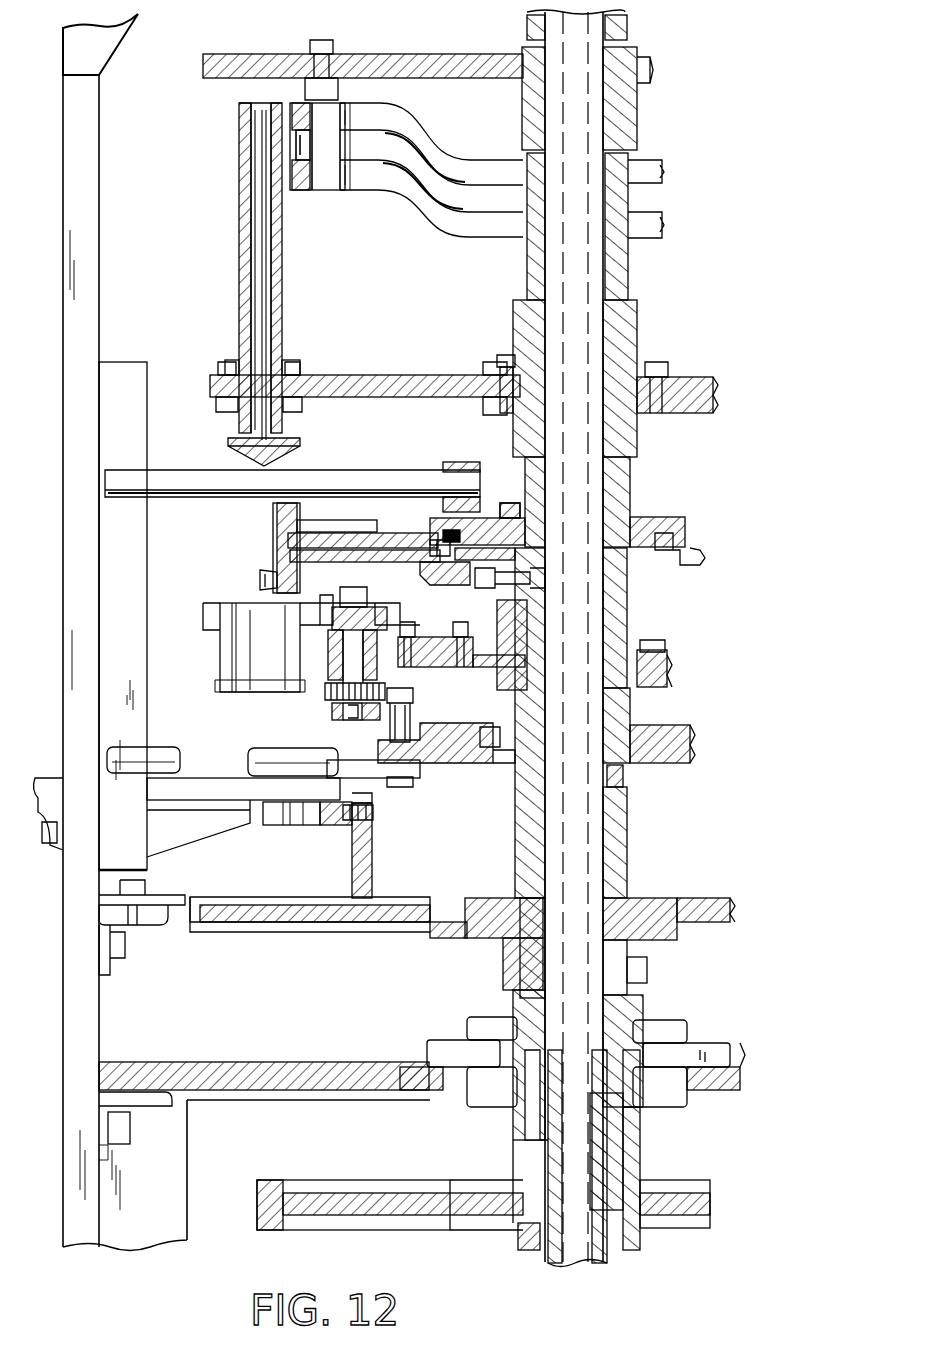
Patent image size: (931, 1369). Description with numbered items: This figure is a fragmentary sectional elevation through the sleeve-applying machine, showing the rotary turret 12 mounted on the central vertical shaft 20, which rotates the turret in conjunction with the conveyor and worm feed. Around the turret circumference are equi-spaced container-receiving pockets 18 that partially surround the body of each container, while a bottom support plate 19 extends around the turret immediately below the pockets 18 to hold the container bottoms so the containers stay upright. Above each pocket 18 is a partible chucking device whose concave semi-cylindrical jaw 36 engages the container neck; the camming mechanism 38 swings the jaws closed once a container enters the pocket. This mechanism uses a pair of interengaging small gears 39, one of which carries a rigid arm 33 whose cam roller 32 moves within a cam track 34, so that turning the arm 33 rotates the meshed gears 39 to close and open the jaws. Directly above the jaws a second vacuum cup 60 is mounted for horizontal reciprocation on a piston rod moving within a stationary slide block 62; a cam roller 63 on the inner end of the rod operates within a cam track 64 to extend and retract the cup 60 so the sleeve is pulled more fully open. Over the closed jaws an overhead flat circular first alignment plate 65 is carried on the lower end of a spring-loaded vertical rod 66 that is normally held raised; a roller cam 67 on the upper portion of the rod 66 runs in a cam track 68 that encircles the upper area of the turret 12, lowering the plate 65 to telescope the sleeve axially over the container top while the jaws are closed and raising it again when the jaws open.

The rotary turret 12 is at (648, 330).
The container-receiving pocket 18 is at (293, 828).
The bottom support plate 19 is at (262, 905).
The central vertical shaft 20 is at (648, 130).
The cam roller 32 is at (416, 724).
The rigid arm 33 is at (365, 722).
The cam track 34 is at (440, 768).
The jaw 36 is at (208, 603).
The camming mechanism 38 is at (415, 697).
The small gear 39 is at (330, 700).
The second vacuum cup 60 is at (263, 573).
The slide block 62 is at (388, 548).
The cam roller 63 is at (440, 556).
The cam track 64 is at (455, 535).
The first alignment plate 65 is at (300, 442).
The vertical rod 66 is at (275, 285).
The roller cam 67 is at (301, 190).
The cam track 68 is at (375, 160).